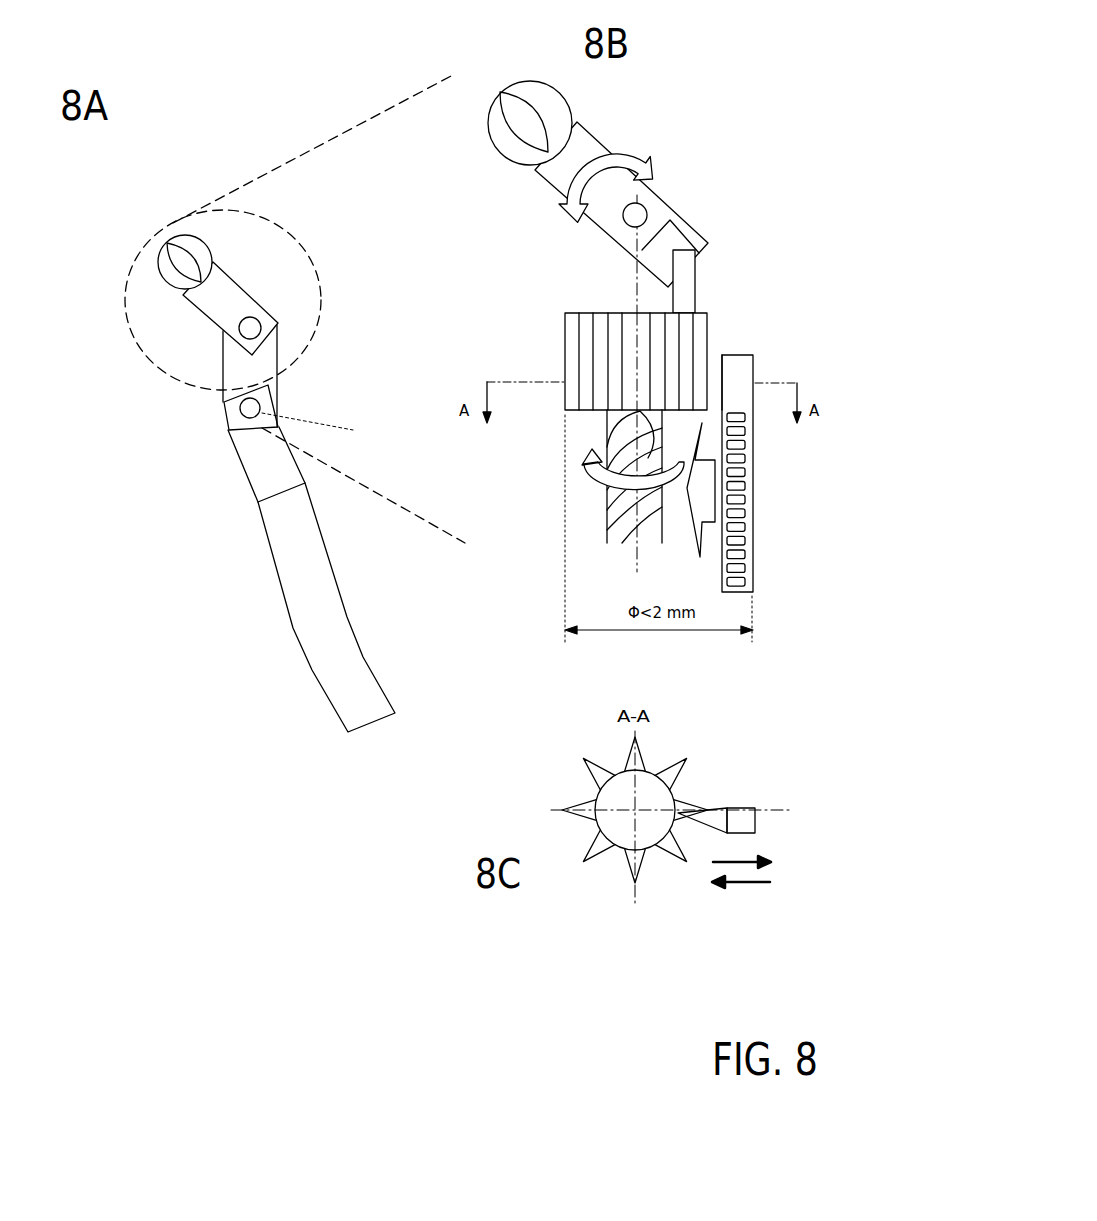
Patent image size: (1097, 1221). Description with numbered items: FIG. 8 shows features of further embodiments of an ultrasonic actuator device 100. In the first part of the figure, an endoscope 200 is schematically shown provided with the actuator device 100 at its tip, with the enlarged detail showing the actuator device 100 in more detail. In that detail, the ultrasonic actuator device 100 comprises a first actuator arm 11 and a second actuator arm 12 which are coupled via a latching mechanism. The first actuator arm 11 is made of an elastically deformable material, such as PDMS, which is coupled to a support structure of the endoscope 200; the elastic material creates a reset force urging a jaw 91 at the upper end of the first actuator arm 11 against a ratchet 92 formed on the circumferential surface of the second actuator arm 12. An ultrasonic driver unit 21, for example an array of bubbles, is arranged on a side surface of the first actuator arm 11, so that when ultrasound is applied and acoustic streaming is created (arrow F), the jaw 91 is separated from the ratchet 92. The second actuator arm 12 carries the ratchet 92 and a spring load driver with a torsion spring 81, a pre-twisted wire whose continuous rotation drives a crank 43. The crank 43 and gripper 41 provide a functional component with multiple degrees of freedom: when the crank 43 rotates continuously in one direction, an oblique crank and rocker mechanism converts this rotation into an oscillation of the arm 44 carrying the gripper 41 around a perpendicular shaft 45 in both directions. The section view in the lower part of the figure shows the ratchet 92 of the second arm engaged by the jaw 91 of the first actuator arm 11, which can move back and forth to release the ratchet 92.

The first actuator arm 11 is at (753, 437).
The second actuator arm 12 is at (565, 338).
The ultrasonic driver unit 21 is at (745, 492).
The gripper 41 is at (567, 93).
The crank 43 is at (697, 290).
The arm 44 is at (670, 210).
The perpendicular shaft 45 is at (643, 210).
The torsion spring 81 is at (642, 513).
The jaw 91 is at (710, 392).
The ratchet 92 is at (680, 363).
The acoustic streaming arrow F is at (708, 507).
The ultrasonic actuator device 100 is at (282, 342).
The endoscope 200 is at (332, 612).